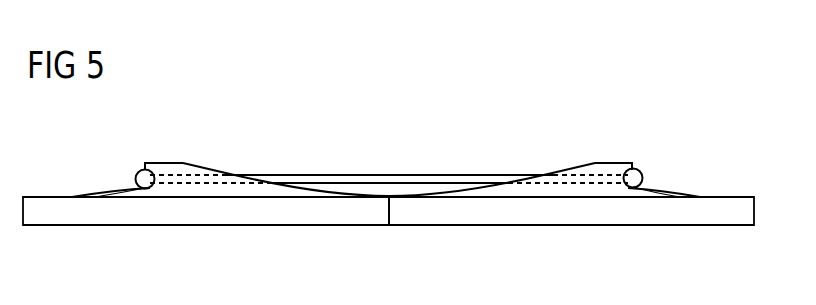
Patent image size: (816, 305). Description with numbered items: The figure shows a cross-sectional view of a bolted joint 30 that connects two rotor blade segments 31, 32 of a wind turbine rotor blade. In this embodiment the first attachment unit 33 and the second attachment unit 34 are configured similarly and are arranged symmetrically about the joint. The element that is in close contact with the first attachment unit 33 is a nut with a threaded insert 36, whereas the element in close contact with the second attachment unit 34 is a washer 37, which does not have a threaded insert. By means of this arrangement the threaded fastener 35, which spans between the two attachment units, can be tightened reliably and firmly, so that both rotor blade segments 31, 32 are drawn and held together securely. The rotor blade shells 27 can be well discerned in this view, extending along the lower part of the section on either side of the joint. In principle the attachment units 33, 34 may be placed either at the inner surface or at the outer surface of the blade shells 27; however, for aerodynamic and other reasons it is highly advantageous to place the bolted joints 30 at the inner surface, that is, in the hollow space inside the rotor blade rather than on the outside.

The rotor blade shell 27 is at (94, 217).
The bolted joint 30 is at (523, 124).
The rotor blade segment 31 is at (227, 217).
The rotor blade segment 32 is at (609, 217).
The first attachment unit 33 is at (165, 168).
The second attachment unit 34 is at (612, 168).
The threaded fastener 35 is at (359, 180).
The nut with threaded insert 36 is at (137, 172).
The washer 37 is at (639, 171).